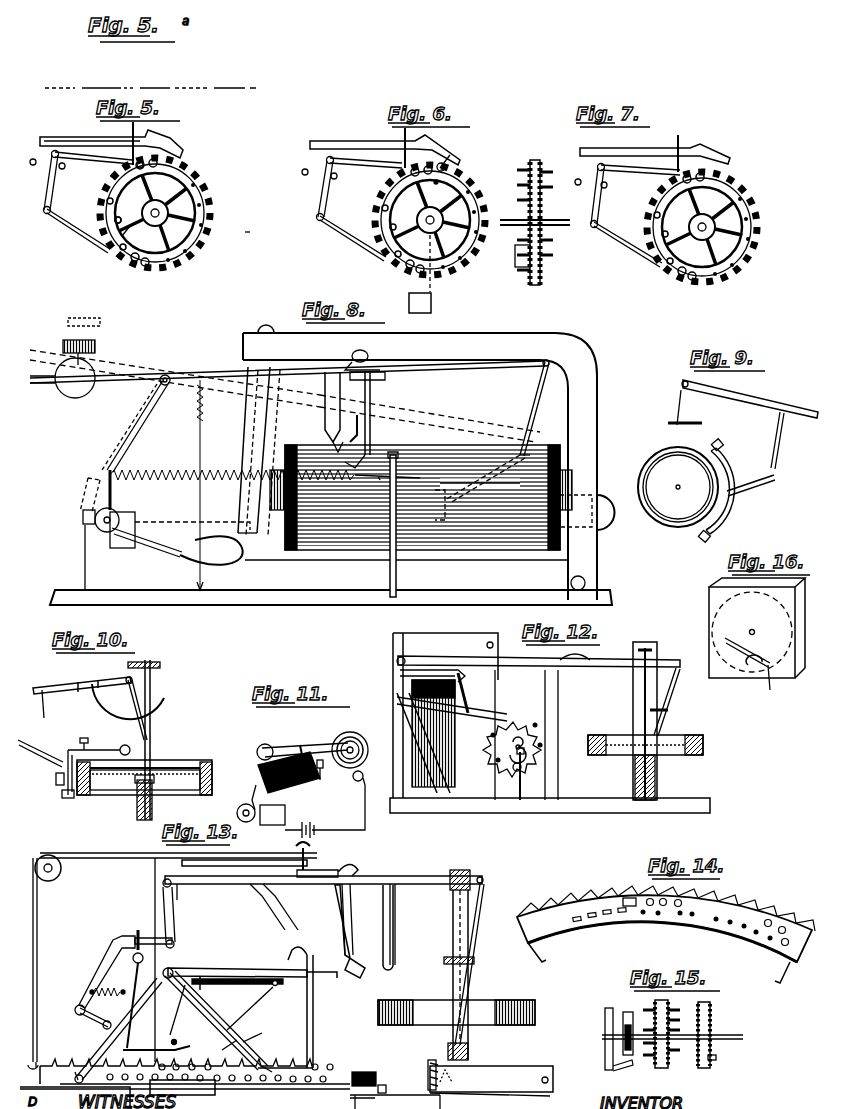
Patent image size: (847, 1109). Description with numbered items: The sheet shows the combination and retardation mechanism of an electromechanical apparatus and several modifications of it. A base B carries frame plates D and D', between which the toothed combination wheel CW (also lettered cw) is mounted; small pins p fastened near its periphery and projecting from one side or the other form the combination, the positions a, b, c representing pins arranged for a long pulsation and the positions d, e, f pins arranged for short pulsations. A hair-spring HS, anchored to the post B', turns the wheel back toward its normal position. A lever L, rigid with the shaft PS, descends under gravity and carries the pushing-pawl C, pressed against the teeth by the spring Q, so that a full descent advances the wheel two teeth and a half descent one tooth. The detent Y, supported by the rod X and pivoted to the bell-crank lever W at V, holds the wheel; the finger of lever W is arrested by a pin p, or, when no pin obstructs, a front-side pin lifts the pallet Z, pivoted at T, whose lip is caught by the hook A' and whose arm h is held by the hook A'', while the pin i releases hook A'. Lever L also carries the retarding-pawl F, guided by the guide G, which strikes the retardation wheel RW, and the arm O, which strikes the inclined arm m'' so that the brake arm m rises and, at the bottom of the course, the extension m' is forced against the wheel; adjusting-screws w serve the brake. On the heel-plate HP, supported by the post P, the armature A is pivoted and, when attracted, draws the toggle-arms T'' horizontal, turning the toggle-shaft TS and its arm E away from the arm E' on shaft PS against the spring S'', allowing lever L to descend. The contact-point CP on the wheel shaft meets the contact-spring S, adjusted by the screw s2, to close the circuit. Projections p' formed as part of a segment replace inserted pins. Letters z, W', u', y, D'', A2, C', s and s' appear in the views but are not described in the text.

In FIG. 5, the pallet pivot T is at (109, 142).
In FIG. 5, the lever arm z is at (92, 130).
In FIG. 7, the lever arm z is at (655, 152).
In FIG. 6, the pallet Z is at (385, 146).
In FIG. 13, the pallet Z is at (252, 1007).
In FIG. 5A, the combination position for long pulsation c is at (235, 77).
In FIG. 5, the combination position for long pulsation c is at (178, 164).
In FIG. 5A, the combination position for long pulsation b is at (155, 77).
In FIG. 5, the combination position for long pulsation b is at (212, 218).
In FIG. 5, the combination wheel CW is at (235, 237).
In FIG. 6, the combination wheel CW is at (535, 231).
In FIG. 7, the combination wheel CW is at (702, 227).
In FIG. 13, the combination wheel CW is at (286, 1077).
In FIG. 15, the combination wheel CW is at (672, 1034).
In FIG. 5A, the combination position for long pulsation a is at (100, 77).
In FIG. 5, the combination position for long pulsation a is at (172, 262).
In FIG. 5, the bell-crank lever W is at (77, 202).
In FIG. 6, the bell-crank lever W is at (419, 227).
In FIG. 7, the bell-crank lever W is at (636, 216).
In FIG. 13, the bell-crank lever W is at (91, 1058).
In FIG. 6, the link arm W' is at (353, 238).
In FIG. 5, the pivot pin u' is at (53, 168).
In FIG. 6, the pivot pin u' is at (325, 176).
In FIG. 7, the pivot pin u' is at (599, 186).
In FIG. 5, the detent Y is at (93, 163).
In FIG. 6, the detent Y is at (366, 169).
In FIG. 12, the detent Y is at (452, 708).
In FIG. 13, the detent Y is at (217, 1020).
In FIG. 5, the pivot y is at (113, 215).
In FIG. 6, the pivot y is at (399, 215).
In FIG. 7, the pivot y is at (661, 209).
In FIG. 12, the pivot y is at (510, 765).
In FIG. 13, the pivot y is at (553, 1080).
In FIG. 15, the pivot y is at (721, 1070).
In FIG. 5, the combination pins p is at (165, 208).
In FIG. 6, the combination pins p is at (419, 208).
In FIG. 7, the combination pins p is at (689, 226).
In FIG. 12, the combination pins p is at (514, 743).
In FIG. 14, the combination pins p is at (666, 926).
In FIG. 15, the combination pins p is at (665, 1040).
In FIG. 14, the pin projections p' is at (638, 926).
In FIG. 5, the horizontal post P is at (126, 236).
In FIG. 8, the horizontal post P is at (570, 582).
In FIG. 5A, the combination position for short pulsation d is at (60, 77).
In FIG. 6, the combination position for short pulsation d is at (410, 265).
In FIG. 5A, the combination position for short pulsation e is at (126, 77).
In FIG. 6, the combination position for short pulsation e is at (450, 268).
In FIG. 5A, the combination position for short pulsation f is at (192, 76).
In FIG. 6, the combination position for short pulsation f is at (478, 210).
In FIG. 6, the pallet arm h is at (439, 148).
In FIG. 6, the bell-crank pivot V is at (320, 219).
In FIG. 6, the combination wheel cw is at (448, 236).
In FIG. 6, the adjusting-screws w is at (420, 274).
In FIG. 9, the adjusting-screws w is at (733, 492).
In FIG. 10, the adjusting-screws w is at (56, 777).
In FIG. 8, the heel-plate HP is at (420, 462).
In FIG. 8, the base frame D'' is at (331, 582).
In FIG. 8, the lever shaft PS is at (168, 372).
In FIG. 8, the arm on lever shaft E' is at (114, 447).
In FIG. 13, the arm on lever shaft E' is at (143, 914).
In FIG. 8, the arm on toggle-shaft E is at (115, 509).
In FIG. 13, the arm on toggle-shaft E is at (107, 992).
In FIG. 8, the toggle-shaft TS is at (92, 550).
In FIG. 15, the toggle-shaft TS is at (729, 1051).
In FIG. 8, the toggle-arms T'' is at (181, 550).
In FIG. 13, the toggle-arms T'' is at (94, 1025).
In FIG. 8, the spring S'' is at (265, 485).
In FIG. 13, the spring S'' is at (107, 986).
In FIG. 8, the armature A is at (259, 451).
In FIG. 8, the hook A' is at (330, 412).
In FIG. 13, the hook A' is at (345, 931).
In FIG. 13, the hook A'' is at (270, 888).
In FIG. 12, the arm A2 is at (538, 724).
In FIG. 8, the pushing-pawl C is at (365, 420).
In FIG. 12, the pushing-pawl C is at (484, 716).
In FIG. 13, the link C' is at (132, 1030).
In FIG. 8, the spring Q is at (362, 356).
In FIG. 12, the spring Q is at (575, 649).
In FIG. 8, the horizontal pin i is at (351, 428).
In FIG. 13, the horizontal pin i is at (311, 854).
In FIG. 9, the lever L is at (750, 399).
In FIG. 10, the lever L is at (82, 678).
In FIG. 13, the lever L is at (415, 880).
In FIG. 9, the retarding-pawl F is at (680, 400).
In FIG. 16, the retarding-pawl F is at (772, 683).
In FIG. 10, the retarding-pawl F is at (138, 740).
In FIG. 12, the retarding-pawl F is at (667, 702).
In FIG. 13, the retarding-pawl F is at (476, 900).
In FIG. 9, the guide G is at (688, 412).
In FIG. 16, the guide G is at (747, 652).
In FIG. 10, the guide G is at (128, 706).
In FIG. 12, the guide G is at (664, 709).
In FIG. 13, the guide G is at (474, 965).
In FIG. 9, the arm O is at (784, 440).
In FIG. 10, the arm O is at (37, 704).
In FIG. 13, the arm O is at (396, 927).
In FIG. 8, the retardation wheel RW is at (421, 521).
In FIG. 9, the retardation wheel RW is at (678, 487).
In FIG. 16, the retardation wheel RW is at (757, 628).
In FIG. 10, the retardation wheel RW is at (144, 779).
In FIG. 12, the retardation wheel RW is at (550, 727).
In FIG. 13, the retardation wheel RW is at (456, 1021).
In FIG. 9, the brake m is at (723, 491).
In FIG. 10, the brake m is at (99, 766).
In FIG. 9, the brake extension m' is at (738, 513).
In FIG. 10, the brake extension m' is at (61, 795).
In FIG. 9, the inclined brake arm m'' is at (757, 487).
In FIG. 10, the inclined brake arm m'' is at (40, 748).
In FIG. 11, the contact-point CP is at (361, 750).
In FIG. 13, the contact-point CP is at (401, 1089).
In FIG. 11, the switch lever s is at (302, 762).
In FIG. 11, the switch contact s' is at (313, 744).
In FIG. 11, the adjusting-screw s2 is at (324, 774).
In FIG. 11, the horizontal post B' is at (315, 803).
In FIG. 12, the horizontal post B' is at (551, 774).
In FIG. 15, the horizontal post B' is at (621, 1071).
In FIG. 12, the base B is at (512, 757).
In FIG. 13, the frame plate D is at (178, 848).
In FIG. 15, the frame plate D' is at (600, 1039).
In FIG. 13, the hair-spring HS is at (44, 962).
In FIG. 15, the hair-spring HS is at (628, 1024).
In FIG. 13, the rod X is at (237, 1013).
In FIG. 13, the contact-spring S is at (429, 1073).